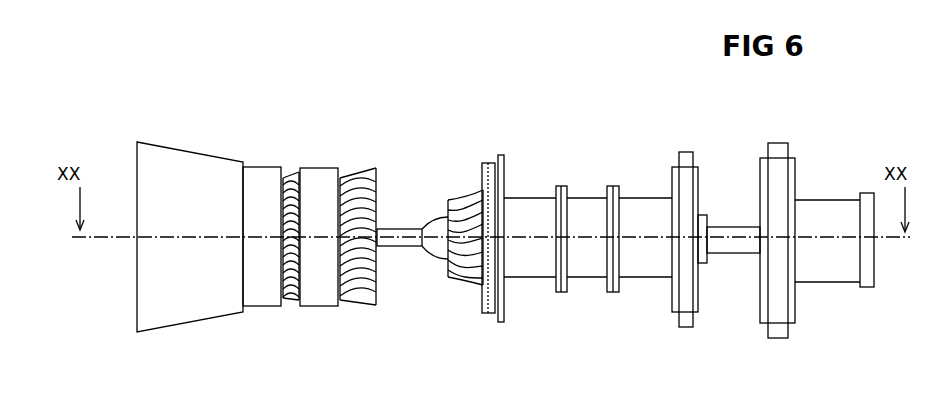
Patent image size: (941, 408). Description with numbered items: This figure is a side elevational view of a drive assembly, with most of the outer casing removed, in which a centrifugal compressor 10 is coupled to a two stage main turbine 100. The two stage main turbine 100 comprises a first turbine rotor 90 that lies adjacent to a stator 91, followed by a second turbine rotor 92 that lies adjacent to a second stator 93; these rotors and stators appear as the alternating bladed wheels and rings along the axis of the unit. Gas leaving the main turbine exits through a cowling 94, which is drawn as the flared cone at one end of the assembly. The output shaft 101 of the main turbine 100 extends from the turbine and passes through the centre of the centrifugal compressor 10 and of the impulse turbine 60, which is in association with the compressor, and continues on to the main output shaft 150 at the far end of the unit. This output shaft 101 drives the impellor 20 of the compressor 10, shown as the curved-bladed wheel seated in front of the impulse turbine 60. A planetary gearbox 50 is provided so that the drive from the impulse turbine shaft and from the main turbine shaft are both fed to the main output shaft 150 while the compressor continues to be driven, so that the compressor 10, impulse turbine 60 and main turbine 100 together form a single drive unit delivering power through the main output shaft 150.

The centrifugal compressor 10 is at (689, 211).
The impellor 20 is at (463, 272).
The planetary gearbox 50 is at (725, 146).
The impulse turbine 60 is at (488, 322).
The first turbine rotor 90 is at (363, 305).
The stator 91 is at (320, 298).
The second turbine rotor 92 is at (293, 297).
The second stator 93 is at (257, 292).
The cowling 94 is at (158, 287).
The two stage main turbine 100 is at (307, 148).
The output shaft 101 is at (388, 228).
The main output shaft 150 is at (822, 272).